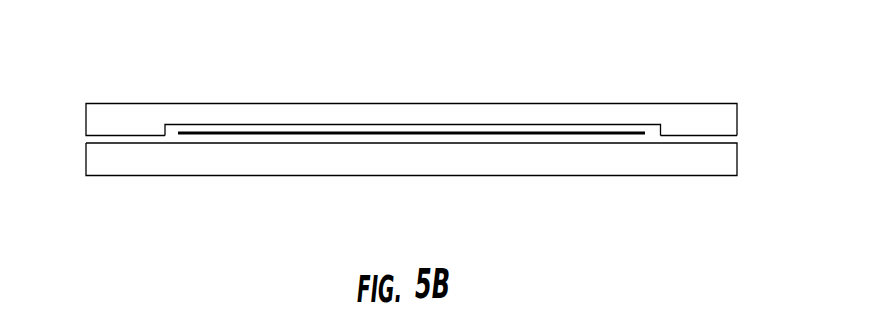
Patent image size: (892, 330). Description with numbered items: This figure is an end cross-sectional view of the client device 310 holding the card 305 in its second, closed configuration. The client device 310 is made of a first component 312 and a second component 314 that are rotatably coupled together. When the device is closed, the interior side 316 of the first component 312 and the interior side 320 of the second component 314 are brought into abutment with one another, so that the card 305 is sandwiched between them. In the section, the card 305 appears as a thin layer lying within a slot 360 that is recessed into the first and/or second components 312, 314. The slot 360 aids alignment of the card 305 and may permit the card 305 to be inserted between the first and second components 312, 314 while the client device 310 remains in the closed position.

The client device 310 is at (159, 60).
The card 305 is at (287, 131).
The first component 312 is at (439, 174).
The second component 314 is at (399, 104).
The interior side 316 is at (120, 143).
The interior side 320 is at (693, 136).
The slot 360 is at (495, 119).